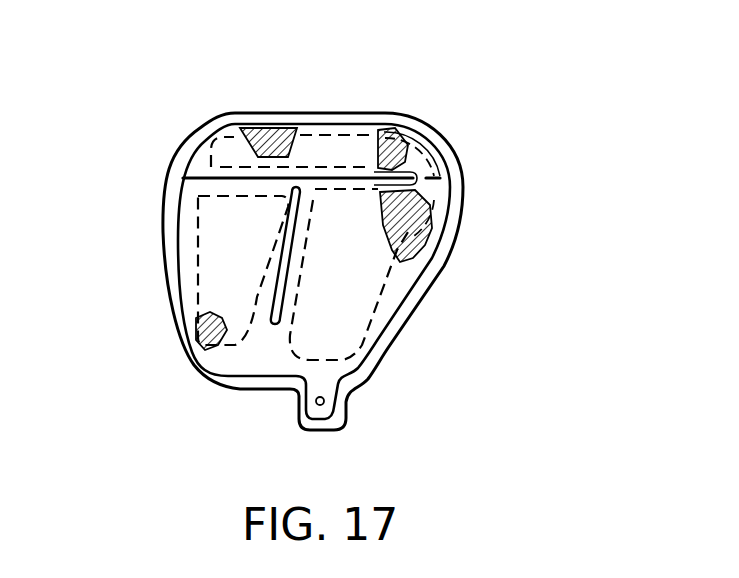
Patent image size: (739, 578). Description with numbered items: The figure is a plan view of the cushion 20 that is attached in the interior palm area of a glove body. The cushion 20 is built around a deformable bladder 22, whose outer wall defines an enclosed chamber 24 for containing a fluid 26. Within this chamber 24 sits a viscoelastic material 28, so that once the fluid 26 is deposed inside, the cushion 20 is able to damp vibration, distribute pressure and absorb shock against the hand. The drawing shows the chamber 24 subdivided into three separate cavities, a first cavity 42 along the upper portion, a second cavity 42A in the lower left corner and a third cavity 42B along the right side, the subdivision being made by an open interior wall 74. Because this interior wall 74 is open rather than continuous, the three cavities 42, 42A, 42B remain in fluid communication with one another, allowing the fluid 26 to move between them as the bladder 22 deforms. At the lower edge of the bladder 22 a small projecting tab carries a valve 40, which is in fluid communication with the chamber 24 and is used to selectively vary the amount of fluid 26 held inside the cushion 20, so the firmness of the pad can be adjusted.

The cushion 20 is at (522, 88).
The deformable bladder 22 is at (152, 190).
The chamber 24 is at (380, 111).
The cavity 42 is at (418, 140).
The fluid 26 is at (412, 152).
The open interior wall 74 is at (412, 192).
The cavity 42B is at (441, 212).
The viscoelastic material 28 is at (427, 242).
The cavity 42A is at (197, 323).
The valve 40 is at (343, 417).